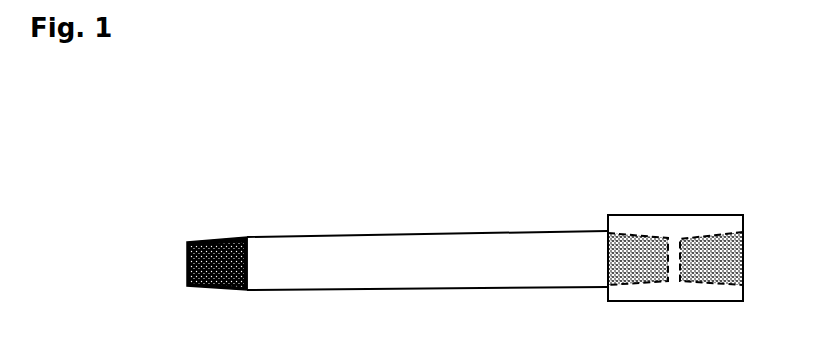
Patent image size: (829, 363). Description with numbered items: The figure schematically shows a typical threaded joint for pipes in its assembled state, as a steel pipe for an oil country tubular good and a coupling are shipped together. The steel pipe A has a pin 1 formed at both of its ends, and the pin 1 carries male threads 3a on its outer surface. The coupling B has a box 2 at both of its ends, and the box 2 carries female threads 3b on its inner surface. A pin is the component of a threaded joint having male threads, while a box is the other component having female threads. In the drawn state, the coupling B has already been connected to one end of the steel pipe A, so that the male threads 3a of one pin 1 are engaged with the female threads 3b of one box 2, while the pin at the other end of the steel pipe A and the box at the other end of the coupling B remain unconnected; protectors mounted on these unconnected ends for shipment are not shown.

The pin 1 is at (218, 228).
The box 2 is at (642, 210).
The male threads 3a is at (196, 241).
The female threads 3b is at (633, 276).
The steel pipe A is at (432, 165).
The coupling B is at (677, 165).